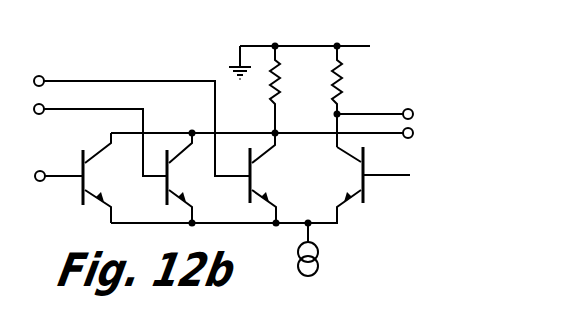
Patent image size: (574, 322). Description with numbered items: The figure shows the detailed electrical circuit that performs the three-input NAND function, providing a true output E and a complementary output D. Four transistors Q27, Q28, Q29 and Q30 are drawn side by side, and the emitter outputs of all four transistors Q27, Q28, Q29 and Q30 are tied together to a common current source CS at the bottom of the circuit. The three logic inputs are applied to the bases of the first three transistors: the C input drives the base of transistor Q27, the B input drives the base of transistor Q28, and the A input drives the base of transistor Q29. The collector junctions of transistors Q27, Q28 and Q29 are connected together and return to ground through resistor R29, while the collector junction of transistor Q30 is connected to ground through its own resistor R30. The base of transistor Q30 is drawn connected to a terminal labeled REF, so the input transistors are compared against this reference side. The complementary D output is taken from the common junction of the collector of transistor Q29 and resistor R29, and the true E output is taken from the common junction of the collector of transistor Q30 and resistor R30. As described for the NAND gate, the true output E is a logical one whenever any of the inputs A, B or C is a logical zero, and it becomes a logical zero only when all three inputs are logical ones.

The transistor Q27 is at (108, 178).
The transistor Q28 is at (191, 178).
The transistor Q29 is at (274, 178).
The transistor Q30 is at (342, 185).
The resistor R29 is at (296, 89).
The resistor R30 is at (358, 80).
The current source CS is at (325, 249).
The input A is at (134, 123).
The input B is at (92, 137).
The input C is at (52, 177).
The complementary output D is at (271, 134).
The true output E is at (383, 115).
The reference input REF is at (406, 176).